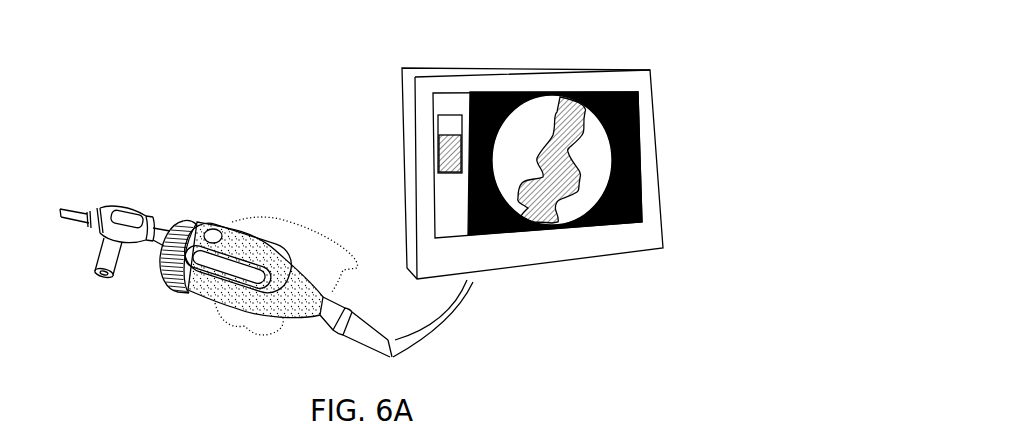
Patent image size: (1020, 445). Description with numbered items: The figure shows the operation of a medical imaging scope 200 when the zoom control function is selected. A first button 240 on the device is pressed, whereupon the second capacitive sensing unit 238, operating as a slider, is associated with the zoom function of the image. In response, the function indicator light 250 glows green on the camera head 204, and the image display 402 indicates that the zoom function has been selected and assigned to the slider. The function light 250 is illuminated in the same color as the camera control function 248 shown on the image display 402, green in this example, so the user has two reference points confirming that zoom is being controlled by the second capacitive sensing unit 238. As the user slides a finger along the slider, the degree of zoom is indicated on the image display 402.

The medical imaging scope 200 is at (254, 247).
The camera head 204 is at (228, 325).
The second capacitive sensing unit 238 is at (220, 260).
The first button 240 is at (219, 230).
The function indicator light 250 is at (197, 252).
The camera control function 248 is at (443, 145).
The image display 402 is at (544, 164).